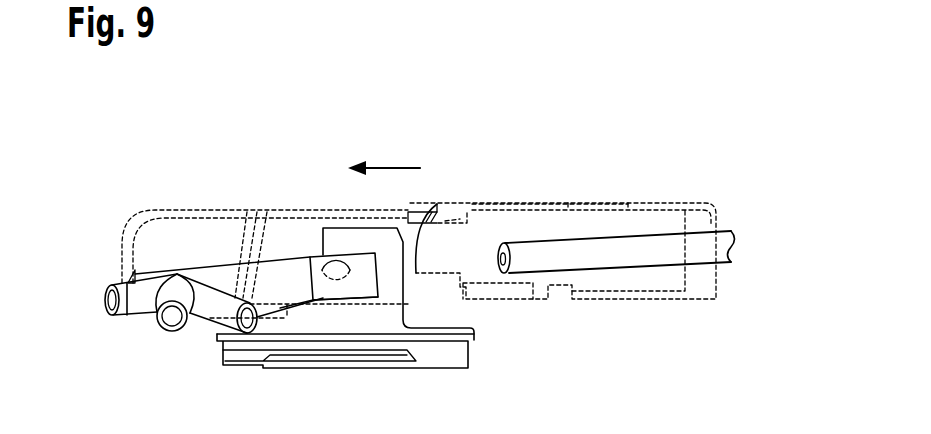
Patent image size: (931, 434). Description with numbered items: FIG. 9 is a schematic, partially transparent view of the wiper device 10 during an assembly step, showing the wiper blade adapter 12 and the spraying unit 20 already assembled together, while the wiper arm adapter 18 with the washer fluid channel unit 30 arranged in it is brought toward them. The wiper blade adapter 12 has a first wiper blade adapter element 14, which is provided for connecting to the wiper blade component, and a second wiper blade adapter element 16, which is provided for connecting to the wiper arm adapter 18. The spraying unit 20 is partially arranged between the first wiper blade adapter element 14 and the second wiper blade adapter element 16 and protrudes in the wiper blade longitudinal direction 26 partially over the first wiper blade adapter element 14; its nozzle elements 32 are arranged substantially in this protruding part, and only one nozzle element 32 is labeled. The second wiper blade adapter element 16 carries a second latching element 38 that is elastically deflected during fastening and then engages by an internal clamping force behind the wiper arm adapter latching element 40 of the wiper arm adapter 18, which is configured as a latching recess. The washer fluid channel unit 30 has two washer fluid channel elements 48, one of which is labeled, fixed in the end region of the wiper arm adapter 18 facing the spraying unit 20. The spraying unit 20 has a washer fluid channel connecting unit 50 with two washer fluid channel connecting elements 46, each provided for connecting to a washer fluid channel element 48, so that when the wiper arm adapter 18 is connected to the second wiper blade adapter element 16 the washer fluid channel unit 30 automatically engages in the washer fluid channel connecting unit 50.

The wiper device 10 is at (733, 182).
The wiper blade adapter 12 is at (295, 198).
The first wiper blade adapter element 14 is at (440, 352).
The second wiper blade adapter element 16 is at (217, 208).
The wiper arm adapter 18 is at (665, 200).
The spraying unit 20 is at (98, 312).
The wiper blade longitudinal direction 26 is at (387, 166).
The washer fluid channel unit 30 is at (731, 264).
The nozzle element 32 is at (135, 300).
The second latching element 38 is at (413, 207).
The wiper arm adapter latching element 40 is at (604, 203).
The washer fluid channel connecting element 46 is at (363, 287).
The washer fluid channel element 48 is at (642, 250).
The washer fluid channel connecting unit 50 is at (332, 310).